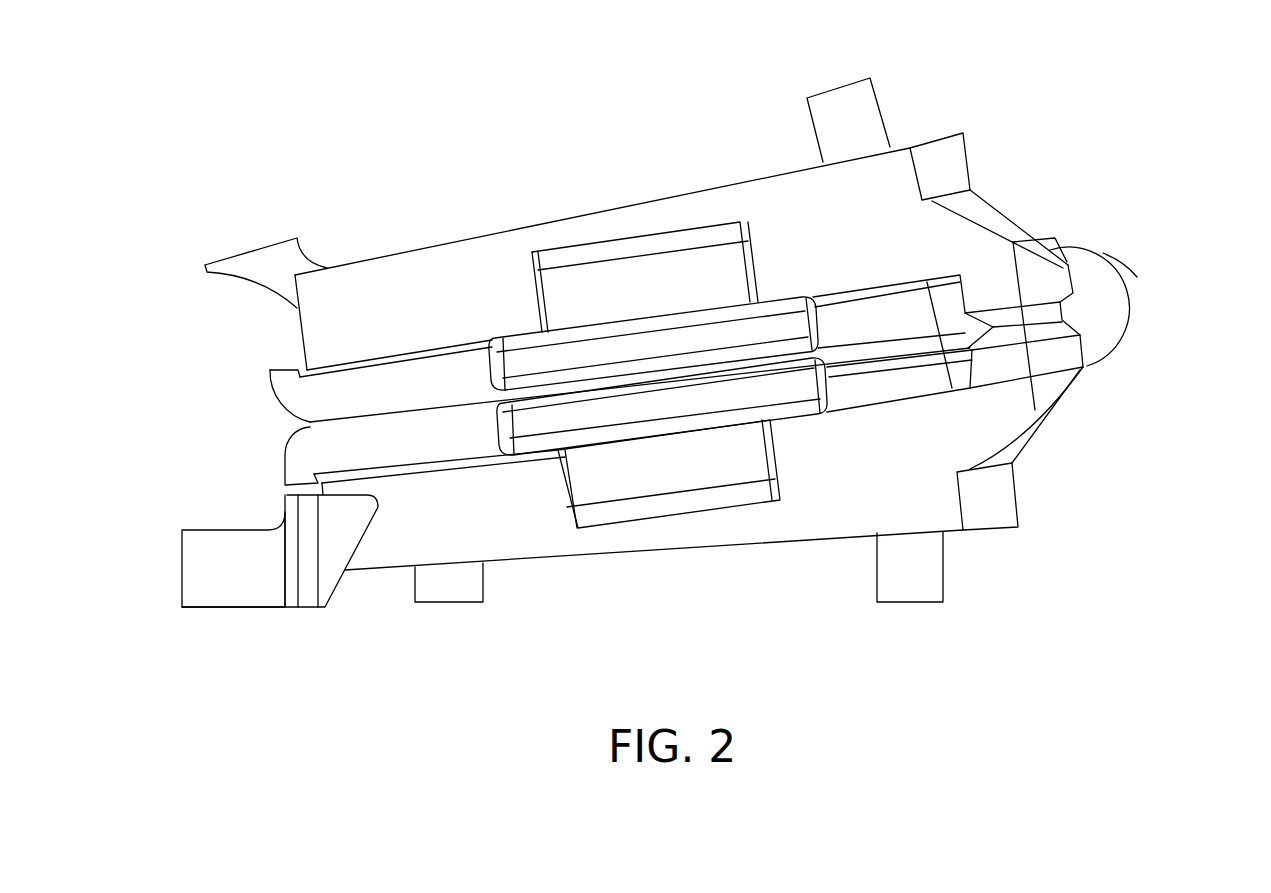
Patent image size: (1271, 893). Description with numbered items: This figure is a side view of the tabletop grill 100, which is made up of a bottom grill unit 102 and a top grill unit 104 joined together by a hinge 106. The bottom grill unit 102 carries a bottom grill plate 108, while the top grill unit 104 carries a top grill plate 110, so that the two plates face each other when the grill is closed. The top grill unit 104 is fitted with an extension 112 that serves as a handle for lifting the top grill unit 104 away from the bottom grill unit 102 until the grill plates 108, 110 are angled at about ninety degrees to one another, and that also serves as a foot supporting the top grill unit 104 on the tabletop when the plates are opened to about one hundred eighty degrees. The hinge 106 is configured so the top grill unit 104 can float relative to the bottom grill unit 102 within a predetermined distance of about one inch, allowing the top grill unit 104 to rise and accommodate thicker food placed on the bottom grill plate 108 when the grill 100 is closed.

The tabletop grill 100 is at (245, 118).
The bottom grill unit 102 is at (1033, 463).
The top grill unit 104 is at (1003, 203).
The hinge 106 is at (1138, 278).
The bottom grill plate 108 is at (283, 467).
The top grill plate 110 is at (270, 402).
The extension 112 is at (298, 238).